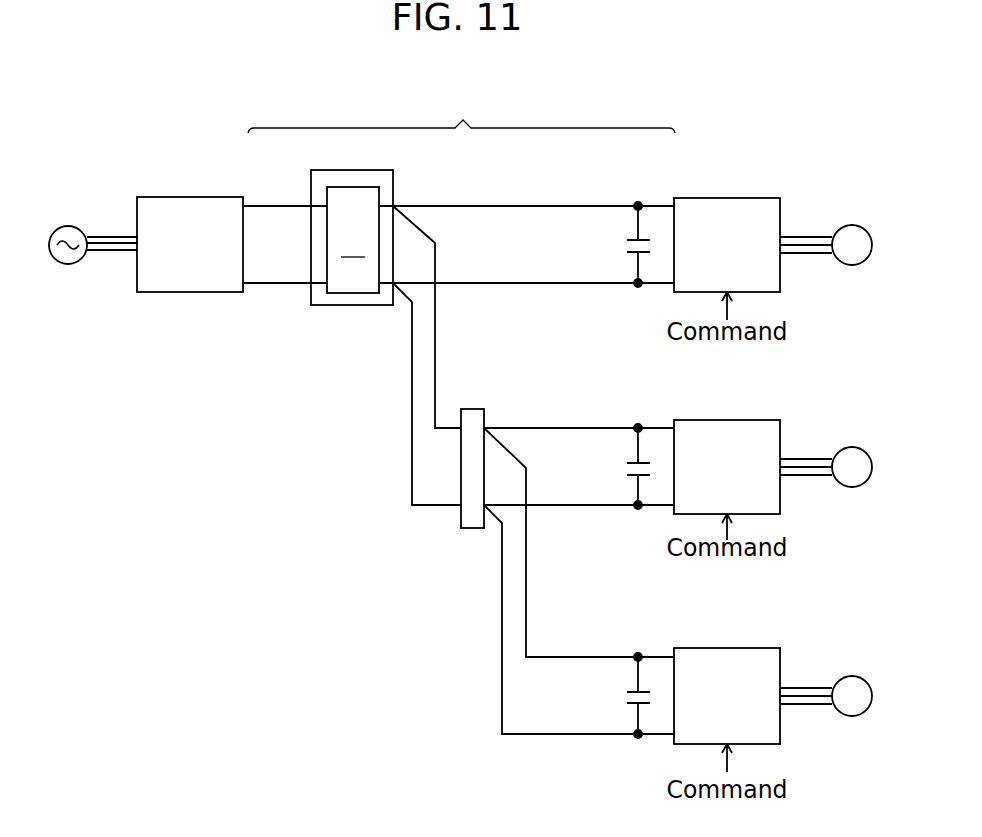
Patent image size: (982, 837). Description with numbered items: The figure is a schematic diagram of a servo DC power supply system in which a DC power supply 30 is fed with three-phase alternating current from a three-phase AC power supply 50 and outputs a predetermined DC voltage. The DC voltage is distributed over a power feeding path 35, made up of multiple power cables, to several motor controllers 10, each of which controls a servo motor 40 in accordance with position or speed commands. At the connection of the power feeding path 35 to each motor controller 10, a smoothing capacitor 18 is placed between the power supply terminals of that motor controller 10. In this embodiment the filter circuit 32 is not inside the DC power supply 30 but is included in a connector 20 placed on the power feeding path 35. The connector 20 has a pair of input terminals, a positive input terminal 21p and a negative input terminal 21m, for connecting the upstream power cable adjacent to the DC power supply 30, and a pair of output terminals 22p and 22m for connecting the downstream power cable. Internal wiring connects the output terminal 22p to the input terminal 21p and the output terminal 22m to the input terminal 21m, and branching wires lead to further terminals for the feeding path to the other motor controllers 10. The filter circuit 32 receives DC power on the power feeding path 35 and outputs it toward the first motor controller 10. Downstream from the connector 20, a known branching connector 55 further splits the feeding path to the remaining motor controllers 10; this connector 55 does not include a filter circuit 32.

The motor controller 10 is at (727, 198).
The smoothing capacitor 18 is at (628, 240).
The connector 20 is at (352, 271).
The positive input terminal 21p is at (310, 205).
The negative input terminal 21m is at (310, 285).
The positive output terminal 22p is at (396, 206).
The negative output terminal 22m is at (397, 283).
The DC power supply 30 is at (190, 197).
The filter circuit 32 is at (340, 306).
The power feeding path 35 is at (461, 114).
The servo motor 40 is at (848, 224).
The three-phase AC power supply 50 is at (70, 223).
The connector 55 is at (470, 530).